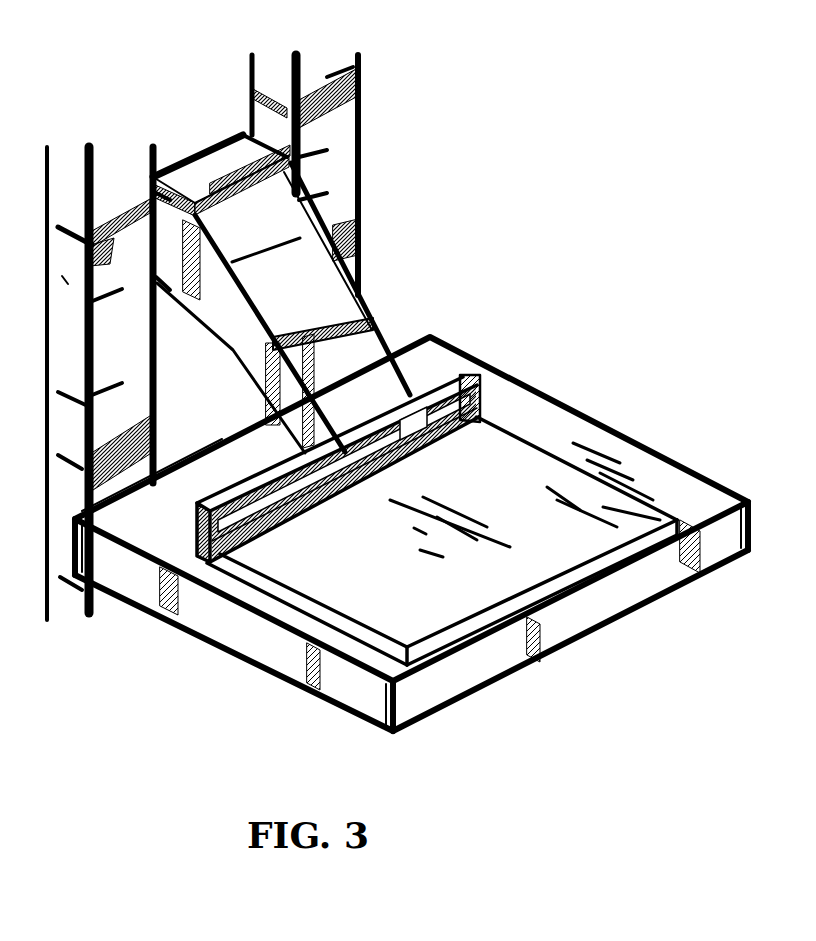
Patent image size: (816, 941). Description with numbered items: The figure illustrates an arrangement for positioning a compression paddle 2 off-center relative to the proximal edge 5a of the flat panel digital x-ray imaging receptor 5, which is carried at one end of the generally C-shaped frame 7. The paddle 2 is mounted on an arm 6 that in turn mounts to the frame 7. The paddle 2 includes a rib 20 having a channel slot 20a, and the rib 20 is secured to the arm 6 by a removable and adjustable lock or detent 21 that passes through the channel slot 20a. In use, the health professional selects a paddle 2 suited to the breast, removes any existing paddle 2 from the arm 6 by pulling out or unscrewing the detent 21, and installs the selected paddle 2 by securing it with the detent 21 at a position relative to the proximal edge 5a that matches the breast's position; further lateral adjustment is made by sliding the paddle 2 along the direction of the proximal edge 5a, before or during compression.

The compression paddle 2 is at (545, 556).
The flat panel digital x-ray imaging receptor 5 is at (660, 448).
The proximal edge 5a is at (660, 563).
The arm 6 is at (374, 304).
The C-shaped frame 7 is at (118, 150).
The rib 20 is at (187, 543).
The channel slot 20a is at (290, 503).
The lock or detent 21 is at (493, 383).